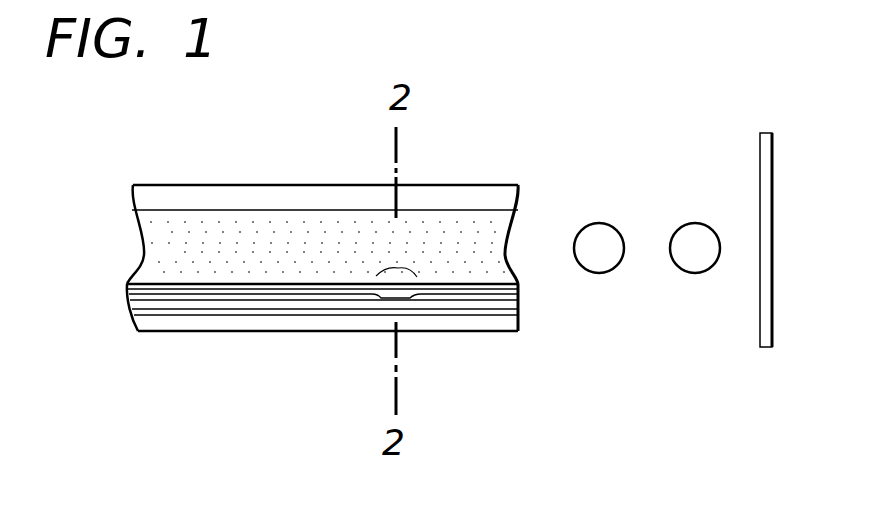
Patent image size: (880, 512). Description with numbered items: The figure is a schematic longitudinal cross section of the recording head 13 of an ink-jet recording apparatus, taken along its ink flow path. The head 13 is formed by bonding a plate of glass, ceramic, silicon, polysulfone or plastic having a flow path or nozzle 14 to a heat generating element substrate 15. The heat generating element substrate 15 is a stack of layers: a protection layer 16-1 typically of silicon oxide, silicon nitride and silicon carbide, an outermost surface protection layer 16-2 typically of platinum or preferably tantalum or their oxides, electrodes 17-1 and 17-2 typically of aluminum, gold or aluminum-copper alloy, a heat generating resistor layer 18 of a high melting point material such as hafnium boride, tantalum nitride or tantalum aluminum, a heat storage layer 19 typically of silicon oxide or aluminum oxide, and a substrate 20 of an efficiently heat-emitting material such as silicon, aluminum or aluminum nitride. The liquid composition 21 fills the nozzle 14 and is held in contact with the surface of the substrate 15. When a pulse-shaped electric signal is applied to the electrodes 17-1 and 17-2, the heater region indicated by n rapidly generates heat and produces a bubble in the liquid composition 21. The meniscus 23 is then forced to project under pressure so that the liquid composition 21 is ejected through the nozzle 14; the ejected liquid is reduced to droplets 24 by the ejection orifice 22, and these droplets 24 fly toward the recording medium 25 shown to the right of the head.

The head 13 is at (212, 185).
The flow path (nozzle) 14 is at (263, 211).
The liquid composition 21 is at (170, 220).
The heater region n is at (398, 267).
The heat generating element substrate 15 is at (122, 279).
The protection layer 16-1 is at (163, 290).
The outermost surface protection layer 16-2 is at (140, 283).
The electrode 17-1 is at (216, 296).
The electrode 17-2 is at (483, 295).
The heat generating resistor layer 18 is at (258, 304).
The heat storage layer 19 is at (308, 313).
The substrate 20 is at (371, 325).
The ejection orifice 22 is at (527, 268).
The meniscus 23 is at (508, 233).
The droplets 24 is at (565, 216).
The recording medium 25 is at (760, 170).